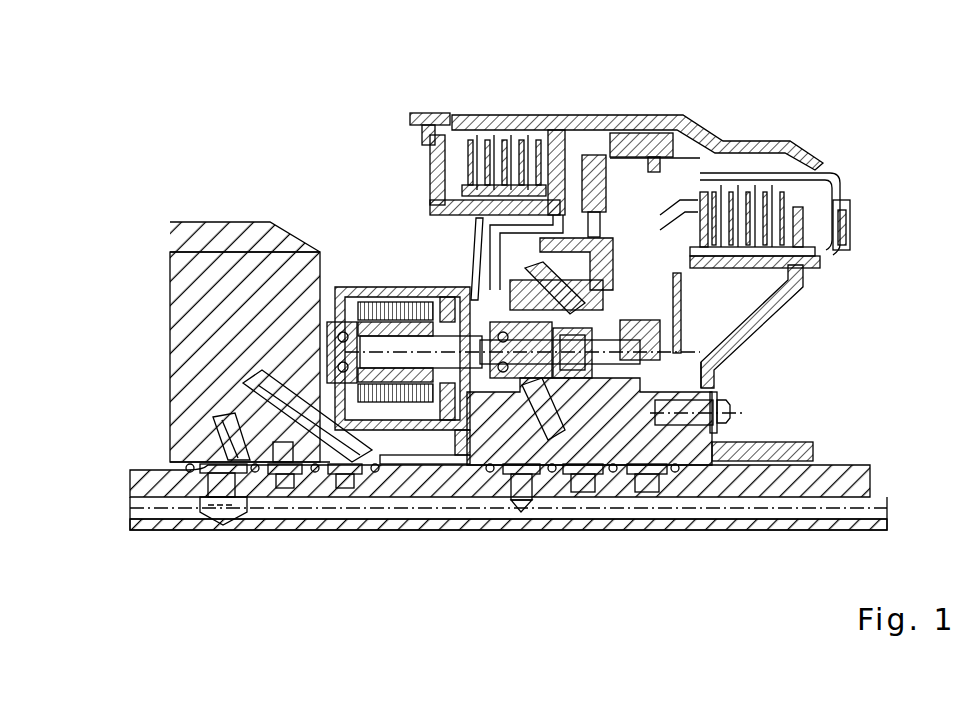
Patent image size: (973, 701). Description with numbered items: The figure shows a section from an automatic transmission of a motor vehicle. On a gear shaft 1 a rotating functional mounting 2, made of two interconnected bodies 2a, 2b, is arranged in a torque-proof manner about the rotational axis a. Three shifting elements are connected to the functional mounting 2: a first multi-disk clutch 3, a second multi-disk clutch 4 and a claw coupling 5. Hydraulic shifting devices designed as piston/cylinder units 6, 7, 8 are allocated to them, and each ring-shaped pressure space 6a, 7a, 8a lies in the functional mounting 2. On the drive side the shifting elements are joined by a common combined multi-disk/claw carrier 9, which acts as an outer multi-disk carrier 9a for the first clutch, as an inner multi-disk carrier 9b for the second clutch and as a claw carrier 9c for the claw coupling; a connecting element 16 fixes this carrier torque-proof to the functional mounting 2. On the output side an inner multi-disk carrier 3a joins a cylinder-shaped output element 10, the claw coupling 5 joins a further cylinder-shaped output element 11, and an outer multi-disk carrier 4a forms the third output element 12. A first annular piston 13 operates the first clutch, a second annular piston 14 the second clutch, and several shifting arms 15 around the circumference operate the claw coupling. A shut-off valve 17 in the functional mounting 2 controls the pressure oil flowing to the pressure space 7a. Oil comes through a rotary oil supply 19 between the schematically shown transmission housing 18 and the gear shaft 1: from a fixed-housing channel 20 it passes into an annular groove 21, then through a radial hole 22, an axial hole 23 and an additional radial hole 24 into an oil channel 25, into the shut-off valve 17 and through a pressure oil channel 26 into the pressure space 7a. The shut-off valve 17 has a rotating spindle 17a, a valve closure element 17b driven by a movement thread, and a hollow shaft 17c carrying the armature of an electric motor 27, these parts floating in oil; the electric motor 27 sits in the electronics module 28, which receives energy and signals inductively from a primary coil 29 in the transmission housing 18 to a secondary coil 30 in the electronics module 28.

The gear shaft 1 is at (845, 482).
The functional mounting 2 is at (720, 387).
The body of the functional mounting 2a is at (393, 470).
The body of the functional mounting 2b is at (740, 465).
The first multi-disk clutch 3 is at (487, 130).
The inner multi-disk carrier 3a is at (520, 275).
The second multi-disk clutch 4 is at (771, 165).
The outer multi-disk carrier 4a is at (850, 188).
The claw coupling 5 is at (586, 156).
The piston/cylinder unit 6 is at (515, 262).
The pressure space 6a is at (487, 455).
The piston/cylinder unit 7 is at (680, 342).
The pressure space 7a is at (668, 330).
The piston/cylinder unit 8 is at (345, 298).
The pressure space 8a is at (555, 198).
The combined multi-disk/claw carrier 9 is at (665, 225).
The outer multi-disk carrier 9a is at (450, 118).
The inner multi-disk carrier 9b is at (838, 262).
The claw carrier 9c is at (610, 200).
The cylinder-shaped output element 10 is at (560, 248).
The cylinder-shaped output element 11 is at (800, 190).
The third output element 12 is at (850, 205).
The first annular piston 13 is at (535, 138).
The second annular piston 14 is at (698, 165).
The shifting arms 15 is at (628, 245).
The connecting element 16 is at (655, 325).
The shut-off valve 17 is at (585, 420).
The rotating spindle 17a is at (452, 468).
The valve closure element 17b is at (640, 400).
The hollow shaft 17c is at (332, 480).
The transmission housing 18 is at (212, 338).
The rotary oil supply 19 is at (197, 457).
The channel 20 is at (232, 432).
The annular groove 21 is at (207, 498).
The radial hole 22 is at (200, 512).
The axial hole 23 is at (192, 508).
The additional radial hole 24 is at (500, 392).
The oil channel 25 is at (530, 380).
The pressure oil channel 26 is at (690, 462).
The electric motor 27 is at (323, 285).
The electronics module 28 is at (377, 282).
The primary coil 29 is at (287, 500).
The secondary coil 30 is at (240, 500).
The rotational axis a is at (822, 522).